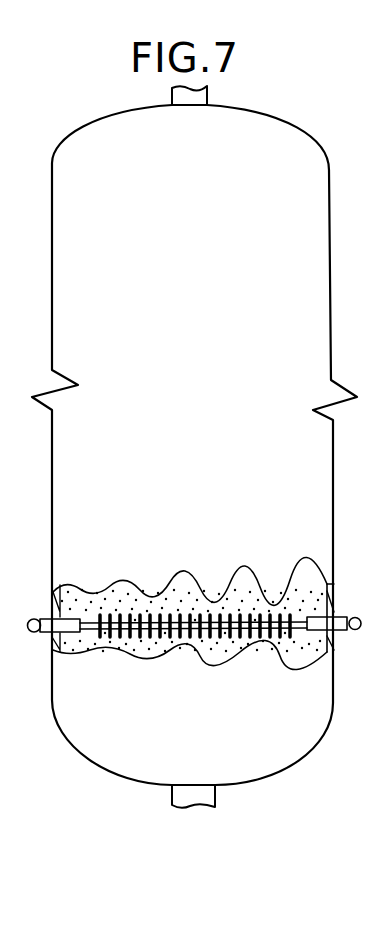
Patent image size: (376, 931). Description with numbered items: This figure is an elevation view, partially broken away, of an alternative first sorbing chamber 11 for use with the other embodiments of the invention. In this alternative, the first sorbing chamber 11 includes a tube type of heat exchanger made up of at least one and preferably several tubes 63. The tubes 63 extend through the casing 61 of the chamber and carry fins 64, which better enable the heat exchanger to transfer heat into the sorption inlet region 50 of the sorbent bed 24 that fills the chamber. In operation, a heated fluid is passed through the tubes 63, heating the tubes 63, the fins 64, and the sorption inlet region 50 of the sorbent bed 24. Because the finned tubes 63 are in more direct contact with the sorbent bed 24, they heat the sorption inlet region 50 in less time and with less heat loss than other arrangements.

The first sorbing chamber 11 is at (213, 233).
The sorbent bed 24 is at (148, 645).
The sorption inlet region 50 is at (195, 623).
The casing 61 is at (57, 599).
The tubes 63 is at (150, 618).
The fins 64 is at (221, 617).